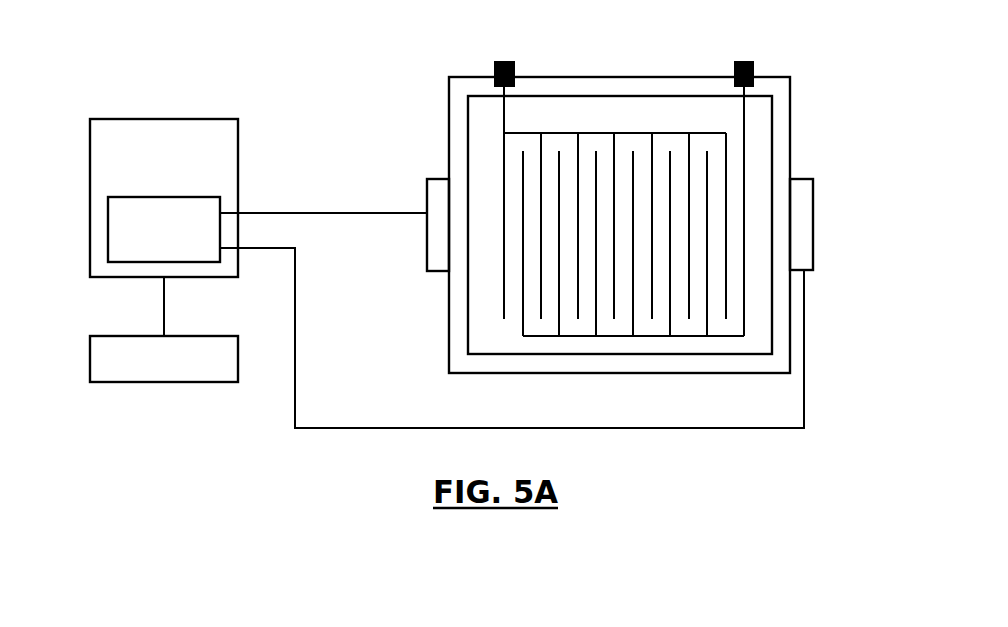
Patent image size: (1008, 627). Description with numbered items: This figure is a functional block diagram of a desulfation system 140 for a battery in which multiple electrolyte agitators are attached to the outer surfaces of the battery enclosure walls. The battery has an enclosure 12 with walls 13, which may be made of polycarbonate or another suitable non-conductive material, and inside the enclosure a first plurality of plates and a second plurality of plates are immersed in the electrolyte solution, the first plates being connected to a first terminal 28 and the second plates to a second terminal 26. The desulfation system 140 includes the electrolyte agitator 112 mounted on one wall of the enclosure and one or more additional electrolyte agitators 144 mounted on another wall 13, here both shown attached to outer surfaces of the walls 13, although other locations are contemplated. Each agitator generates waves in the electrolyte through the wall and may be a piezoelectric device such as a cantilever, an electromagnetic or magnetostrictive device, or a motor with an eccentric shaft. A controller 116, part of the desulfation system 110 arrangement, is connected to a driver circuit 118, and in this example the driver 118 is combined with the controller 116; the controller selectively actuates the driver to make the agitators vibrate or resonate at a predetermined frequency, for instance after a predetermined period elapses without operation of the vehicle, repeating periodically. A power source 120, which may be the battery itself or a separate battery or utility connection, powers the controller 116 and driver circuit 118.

The desulfation system 110 is at (228, 94).
The controller 116 is at (127, 122).
The driver circuit 118 is at (108, 209).
The power source 120 is at (164, 371).
The desulfation system 140 is at (412, 58).
The enclosure 12 is at (428, 118).
The walls 13 is at (449, 161).
The second terminal 26 is at (628, 77).
The first terminal 28 is at (504, 61).
The electrolyte agitator 112 is at (427, 253).
The additional electrolyte agitator 144 is at (813, 225).